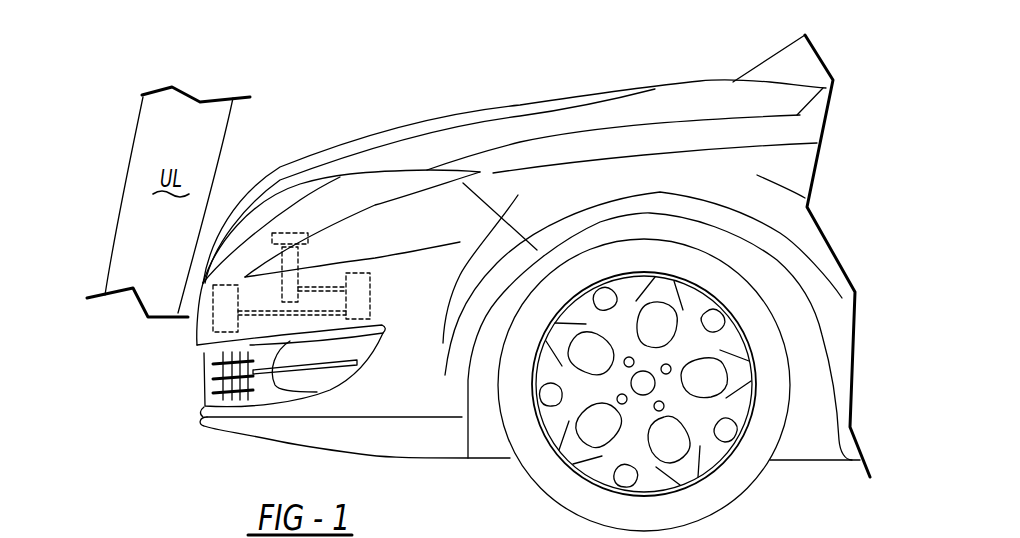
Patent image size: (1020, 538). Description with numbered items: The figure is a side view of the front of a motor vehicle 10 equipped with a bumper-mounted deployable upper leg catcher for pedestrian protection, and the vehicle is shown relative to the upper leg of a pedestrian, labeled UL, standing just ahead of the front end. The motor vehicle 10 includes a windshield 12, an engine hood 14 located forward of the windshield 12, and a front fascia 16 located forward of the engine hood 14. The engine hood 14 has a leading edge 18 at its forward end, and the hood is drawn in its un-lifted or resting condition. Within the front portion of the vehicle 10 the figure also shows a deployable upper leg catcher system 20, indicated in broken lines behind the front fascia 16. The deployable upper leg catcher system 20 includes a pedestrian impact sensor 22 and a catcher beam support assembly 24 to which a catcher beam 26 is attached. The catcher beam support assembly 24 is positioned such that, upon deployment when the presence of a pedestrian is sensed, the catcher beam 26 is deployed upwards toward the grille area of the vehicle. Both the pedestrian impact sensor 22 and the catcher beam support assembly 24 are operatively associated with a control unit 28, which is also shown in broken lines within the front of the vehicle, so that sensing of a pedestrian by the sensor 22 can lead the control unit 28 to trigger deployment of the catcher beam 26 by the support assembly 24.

The motor vehicle 10 is at (441, 100).
The windshield 12 is at (795, 63).
The engine hood 14 is at (593, 114).
The front fascia 16 is at (198, 422).
The leading edge 18 is at (203, 313).
The deployable upper leg catcher system 20 is at (378, 243).
The pedestrian impact sensor 22 is at (220, 323).
The catcher beam support assembly 24 is at (290, 278).
The catcher beam 26 is at (281, 232).
The control unit 28 is at (360, 297).